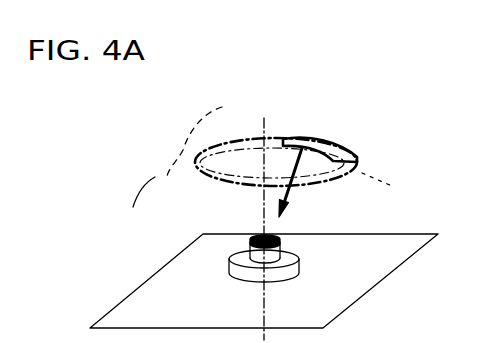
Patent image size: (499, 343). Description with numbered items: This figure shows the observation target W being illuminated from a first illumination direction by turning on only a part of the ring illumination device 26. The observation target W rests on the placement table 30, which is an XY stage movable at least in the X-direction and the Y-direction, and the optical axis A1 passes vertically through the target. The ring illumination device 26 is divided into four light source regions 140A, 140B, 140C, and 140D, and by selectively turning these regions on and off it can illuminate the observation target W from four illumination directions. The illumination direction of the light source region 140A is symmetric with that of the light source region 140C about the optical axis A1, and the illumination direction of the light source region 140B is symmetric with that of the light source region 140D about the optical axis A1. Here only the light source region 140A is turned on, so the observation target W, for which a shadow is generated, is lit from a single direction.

The ring illumination device 26 is at (166, 134).
The placement table 30 is at (137, 308).
The observation target W is at (287, 272).
The optical axis A1 is at (263, 306).
The light source region 140A is at (324, 138).
The light source region 140B is at (222, 133).
The light source region 140C is at (130, 206).
The light source region 140D is at (348, 182).